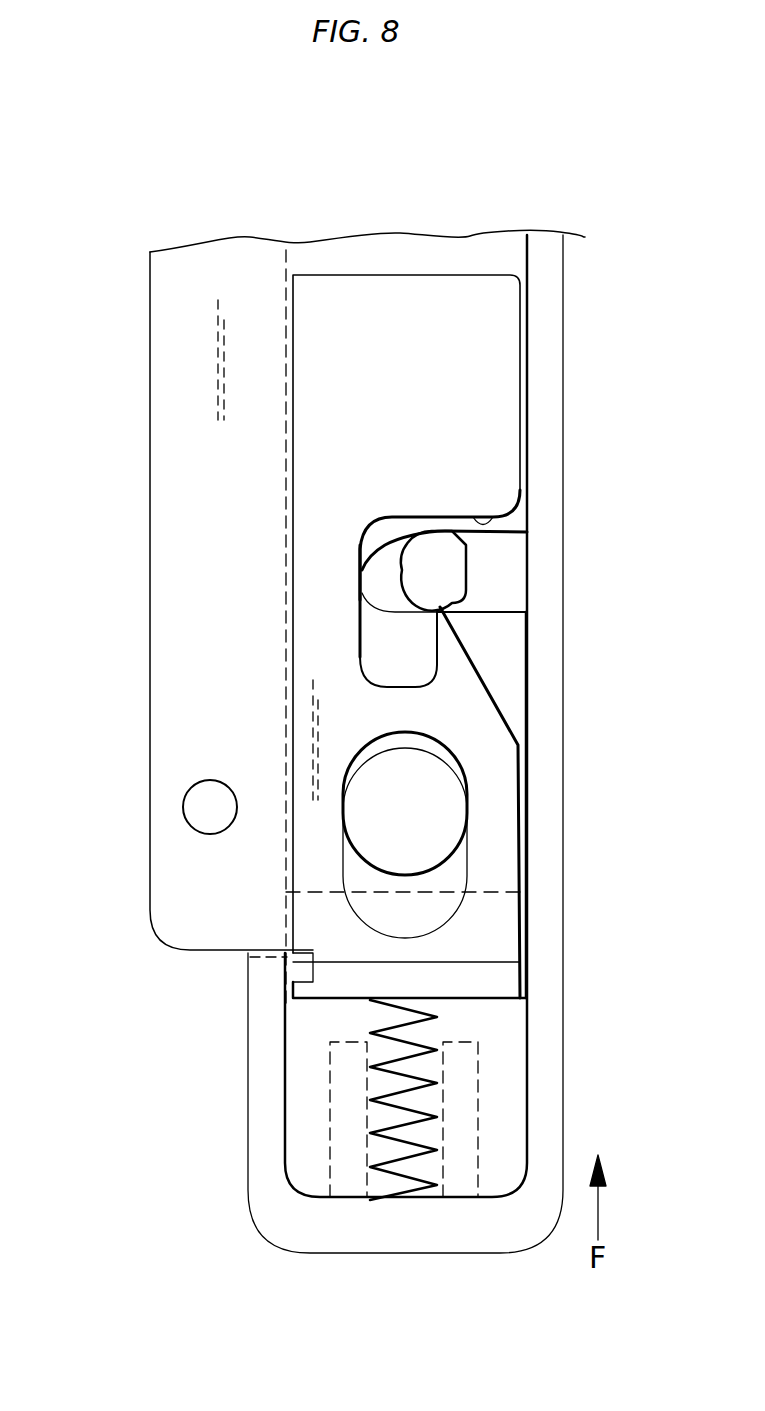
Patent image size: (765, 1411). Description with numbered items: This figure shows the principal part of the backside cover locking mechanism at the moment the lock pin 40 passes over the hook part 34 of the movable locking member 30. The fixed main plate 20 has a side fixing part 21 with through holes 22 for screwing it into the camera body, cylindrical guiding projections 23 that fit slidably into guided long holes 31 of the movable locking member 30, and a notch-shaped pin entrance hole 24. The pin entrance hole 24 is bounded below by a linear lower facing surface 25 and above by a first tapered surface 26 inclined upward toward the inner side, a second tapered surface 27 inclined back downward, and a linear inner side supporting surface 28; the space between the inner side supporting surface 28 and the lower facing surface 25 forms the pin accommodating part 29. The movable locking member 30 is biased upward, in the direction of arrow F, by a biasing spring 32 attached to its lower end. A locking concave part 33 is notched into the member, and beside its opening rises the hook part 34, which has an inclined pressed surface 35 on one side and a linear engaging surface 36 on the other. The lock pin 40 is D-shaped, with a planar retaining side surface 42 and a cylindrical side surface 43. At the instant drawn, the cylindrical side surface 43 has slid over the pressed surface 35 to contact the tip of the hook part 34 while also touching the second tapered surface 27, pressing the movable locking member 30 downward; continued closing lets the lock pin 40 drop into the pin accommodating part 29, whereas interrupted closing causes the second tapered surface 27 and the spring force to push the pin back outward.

The main plate 20 is at (142, 232).
The side fixing part 21 is at (182, 467).
The through hole 22 is at (190, 805).
The guiding projection 23 is at (428, 838).
The pin entrance hole 24 is at (514, 569).
The lower facing surface 25 is at (497, 612).
The first tapered surface 26 is at (530, 540).
The second tapered surface 27 is at (425, 545).
The inner side supporting surface 28 is at (368, 545).
The pin accommodating part 29 is at (370, 578).
The movable locking member 30 is at (490, 330).
The guided long hole 31 is at (465, 862).
The biasing spring 32 is at (437, 1017).
The locking concave part 33 is at (497, 513).
The hook part 34 is at (450, 643).
The pressed surface 35 is at (490, 660).
The engaging surface 36 is at (437, 653).
The lock pin 40 is at (440, 547).
The retaining side surface 42 is at (467, 578).
The cylindrical side surface 43 is at (393, 547).